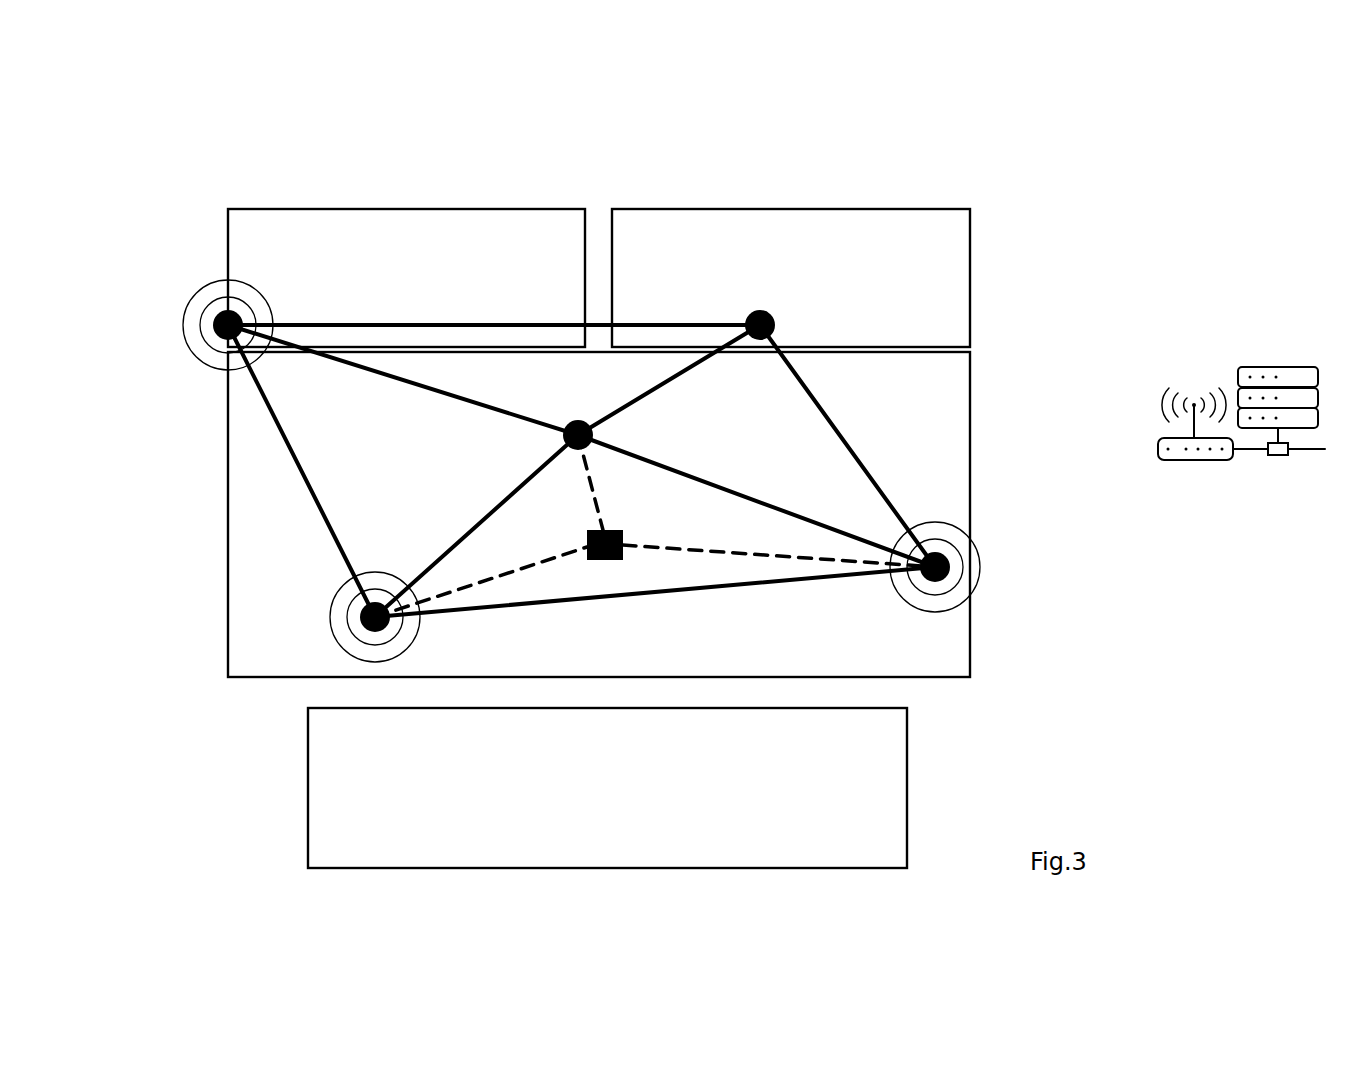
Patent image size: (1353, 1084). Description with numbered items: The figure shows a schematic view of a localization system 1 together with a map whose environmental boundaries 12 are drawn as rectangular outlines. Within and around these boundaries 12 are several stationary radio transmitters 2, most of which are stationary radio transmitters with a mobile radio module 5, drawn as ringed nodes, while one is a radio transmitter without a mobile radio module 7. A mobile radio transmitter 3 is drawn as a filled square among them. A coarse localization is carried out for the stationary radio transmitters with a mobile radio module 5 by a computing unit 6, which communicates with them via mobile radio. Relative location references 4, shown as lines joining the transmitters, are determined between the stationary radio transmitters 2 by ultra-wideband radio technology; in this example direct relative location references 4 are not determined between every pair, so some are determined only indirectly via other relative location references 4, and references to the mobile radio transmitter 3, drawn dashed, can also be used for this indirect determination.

The localization system 1 is at (1072, 243).
The stationary radio transmitter 2 is at (620, 445).
The mobile radio transmitter 3 is at (625, 548).
The relative location reference 4 is at (590, 512).
The stationary radio transmitter with a mobile radio module 5 is at (215, 295).
The computing unit 6 is at (1279, 345).
The radio transmitter without a mobile radio module 7 is at (758, 310).
The environmental boundary 12 is at (807, 209).